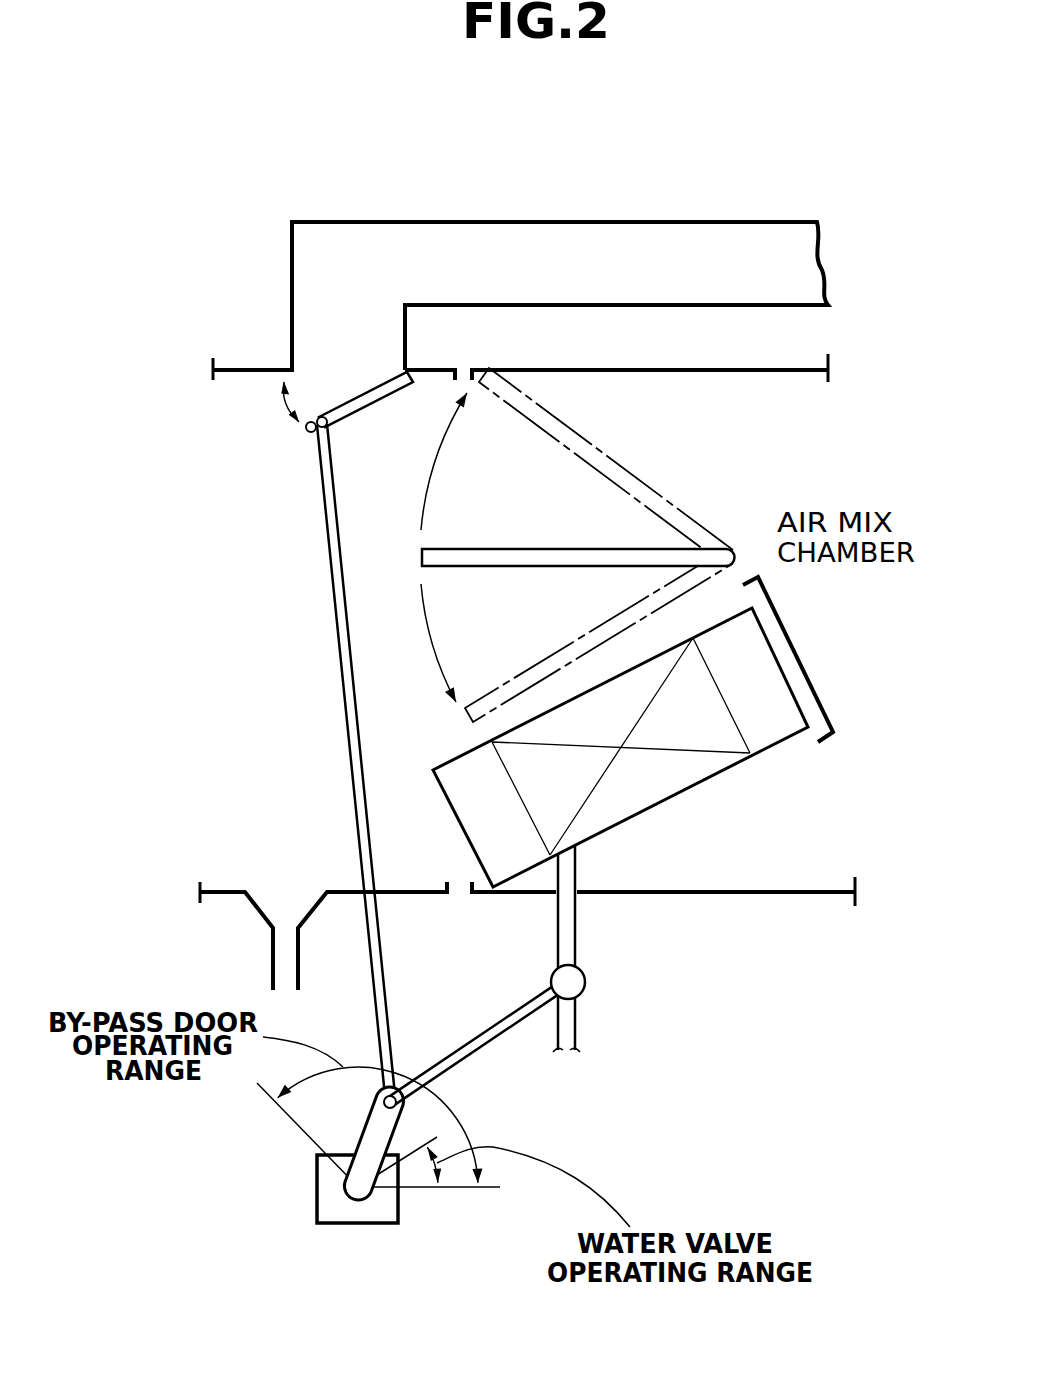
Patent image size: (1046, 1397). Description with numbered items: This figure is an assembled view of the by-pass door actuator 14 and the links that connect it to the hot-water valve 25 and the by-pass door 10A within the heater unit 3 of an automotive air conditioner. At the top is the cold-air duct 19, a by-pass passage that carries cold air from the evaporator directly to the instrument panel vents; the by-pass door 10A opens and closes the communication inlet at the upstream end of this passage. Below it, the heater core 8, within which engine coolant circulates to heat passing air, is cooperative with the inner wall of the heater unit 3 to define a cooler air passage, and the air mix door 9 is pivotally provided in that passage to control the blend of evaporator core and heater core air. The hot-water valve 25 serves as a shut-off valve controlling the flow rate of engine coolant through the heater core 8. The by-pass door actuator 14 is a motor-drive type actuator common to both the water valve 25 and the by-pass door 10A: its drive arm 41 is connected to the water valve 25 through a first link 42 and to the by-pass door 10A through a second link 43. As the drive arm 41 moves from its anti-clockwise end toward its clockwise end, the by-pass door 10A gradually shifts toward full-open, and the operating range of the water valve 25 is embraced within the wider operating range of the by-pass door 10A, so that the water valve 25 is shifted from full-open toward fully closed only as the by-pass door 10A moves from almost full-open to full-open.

The cold-air duct 19 is at (690, 240).
The by-pass door 10A is at (353, 403).
The air mix door 9 is at (533, 555).
The heater core 8 is at (687, 778).
The heater unit 3 is at (747, 908).
The hot-water valve 25 is at (580, 982).
The second link 43 is at (382, 988).
The first link 42 is at (477, 1052).
The drive arm 41 is at (388, 1125).
The by-pass door actuator 14 is at (325, 1212).